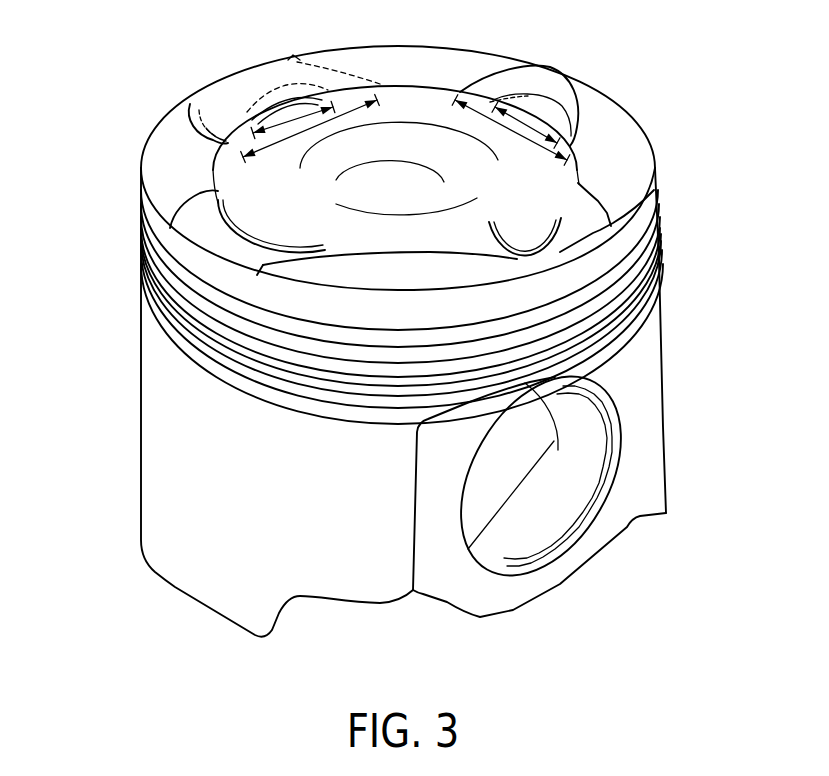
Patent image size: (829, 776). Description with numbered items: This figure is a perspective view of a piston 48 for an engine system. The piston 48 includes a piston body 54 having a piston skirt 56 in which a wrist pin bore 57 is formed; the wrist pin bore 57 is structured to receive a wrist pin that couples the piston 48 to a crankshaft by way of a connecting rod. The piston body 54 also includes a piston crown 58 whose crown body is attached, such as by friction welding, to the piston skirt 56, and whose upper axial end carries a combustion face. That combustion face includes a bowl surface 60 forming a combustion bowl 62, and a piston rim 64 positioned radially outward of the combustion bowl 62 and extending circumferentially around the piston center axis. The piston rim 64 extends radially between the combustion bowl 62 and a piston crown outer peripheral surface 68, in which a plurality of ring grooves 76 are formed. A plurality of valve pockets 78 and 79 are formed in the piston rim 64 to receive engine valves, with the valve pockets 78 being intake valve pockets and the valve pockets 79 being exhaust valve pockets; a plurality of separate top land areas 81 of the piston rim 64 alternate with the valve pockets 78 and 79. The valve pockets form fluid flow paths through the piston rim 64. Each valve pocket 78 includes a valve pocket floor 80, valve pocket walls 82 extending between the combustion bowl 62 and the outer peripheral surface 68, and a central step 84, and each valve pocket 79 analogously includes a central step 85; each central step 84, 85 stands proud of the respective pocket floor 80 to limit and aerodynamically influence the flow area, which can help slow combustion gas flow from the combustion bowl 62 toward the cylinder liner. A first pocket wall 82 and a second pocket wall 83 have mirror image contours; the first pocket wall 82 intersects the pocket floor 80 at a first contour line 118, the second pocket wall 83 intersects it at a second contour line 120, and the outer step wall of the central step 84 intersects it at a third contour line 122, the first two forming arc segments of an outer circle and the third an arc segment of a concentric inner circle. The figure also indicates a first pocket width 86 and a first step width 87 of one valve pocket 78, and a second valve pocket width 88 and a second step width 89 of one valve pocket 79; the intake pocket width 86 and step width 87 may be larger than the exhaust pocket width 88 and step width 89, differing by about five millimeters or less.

The piston 48 is at (401, 318).
The piston body 54 is at (660, 233).
The piston skirt 56 is at (146, 460).
The wrist pin bore 57 is at (590, 483).
The piston crown 58 is at (146, 210).
The bowl surface 60 is at (424, 132).
The combustion bowl 62 is at (275, 183).
The piston rim 64 is at (146, 165).
The piston crown outer peripheral surface 68 is at (318, 303).
The ring grooves 76 is at (650, 285).
The valve pockets (intake valve pockets) 78 is at (274, 74).
The valve pockets (exhaust valve pockets) 79 is at (571, 82).
The valve pocket floor 80 is at (246, 252).
The top land areas 81 is at (413, 48).
The valve pocket walls (first pocket wall) 82 is at (295, 57).
The second pocket wall 83 is at (195, 106).
The central step 84 is at (252, 98).
The central step 85 is at (580, 112).
The first pocket width 86 is at (303, 132).
The first step width 87 is at (280, 127).
The second valve pocket width 88 is at (500, 130).
The second step width 89 is at (548, 103).
The first contour line 118 is at (341, 76).
The second contour line 120 is at (195, 103).
The third contour line 122 is at (218, 138).